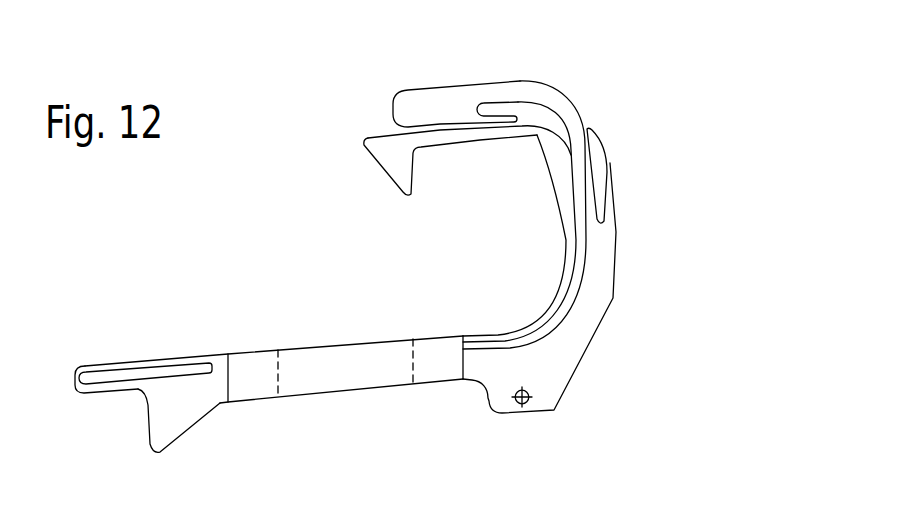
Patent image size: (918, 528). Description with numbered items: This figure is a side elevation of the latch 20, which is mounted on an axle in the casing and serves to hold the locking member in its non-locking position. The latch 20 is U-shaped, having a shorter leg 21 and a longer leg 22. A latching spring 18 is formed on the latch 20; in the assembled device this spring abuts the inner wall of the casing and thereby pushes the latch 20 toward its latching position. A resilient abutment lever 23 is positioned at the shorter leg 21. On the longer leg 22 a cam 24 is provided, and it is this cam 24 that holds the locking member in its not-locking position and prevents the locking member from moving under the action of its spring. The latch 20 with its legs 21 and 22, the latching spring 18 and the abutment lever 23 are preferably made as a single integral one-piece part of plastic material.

The latching spring 18 is at (611, 166).
The latch 20 is at (340, 404).
The shorter leg 21 is at (453, 110).
The longer leg 22 is at (110, 376).
The resilient abutment lever 23 is at (373, 135).
The cam 24 is at (167, 426).